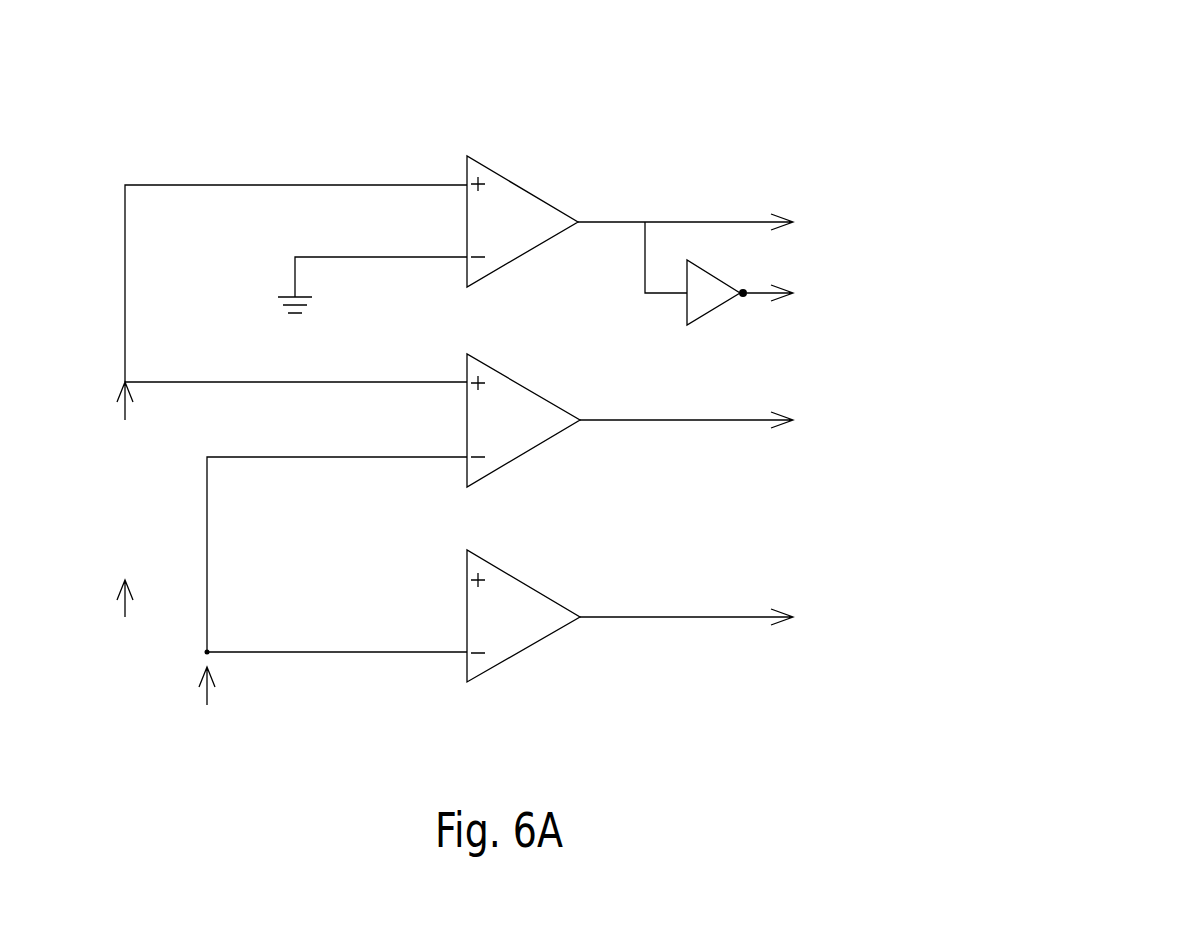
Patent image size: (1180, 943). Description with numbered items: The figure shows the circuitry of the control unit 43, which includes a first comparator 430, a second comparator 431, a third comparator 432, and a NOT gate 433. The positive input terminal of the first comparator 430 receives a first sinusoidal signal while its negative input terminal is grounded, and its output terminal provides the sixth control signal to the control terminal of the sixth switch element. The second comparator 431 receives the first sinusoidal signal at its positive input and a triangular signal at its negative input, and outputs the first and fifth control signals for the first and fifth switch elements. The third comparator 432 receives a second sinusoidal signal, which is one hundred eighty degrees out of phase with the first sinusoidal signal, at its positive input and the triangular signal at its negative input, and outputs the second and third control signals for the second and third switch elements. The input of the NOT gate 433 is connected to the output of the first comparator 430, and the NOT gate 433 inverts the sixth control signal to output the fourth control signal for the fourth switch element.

The control unit 43 is at (1153, 89).
The first comparator 430 is at (525, 185).
The second comparator 431 is at (523, 385).
The third comparator 432 is at (523, 582).
The NOT gate 433 is at (713, 310).